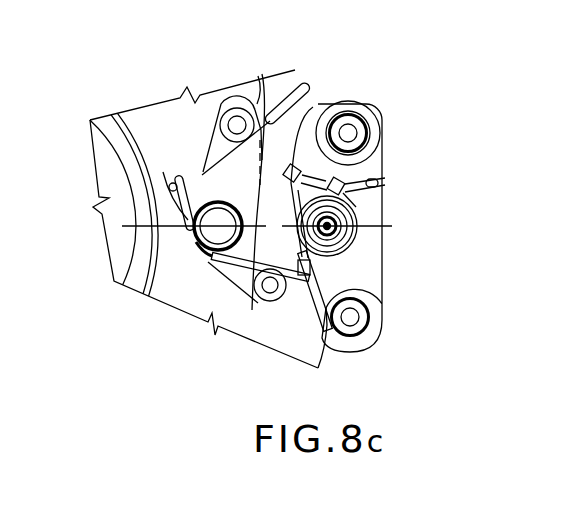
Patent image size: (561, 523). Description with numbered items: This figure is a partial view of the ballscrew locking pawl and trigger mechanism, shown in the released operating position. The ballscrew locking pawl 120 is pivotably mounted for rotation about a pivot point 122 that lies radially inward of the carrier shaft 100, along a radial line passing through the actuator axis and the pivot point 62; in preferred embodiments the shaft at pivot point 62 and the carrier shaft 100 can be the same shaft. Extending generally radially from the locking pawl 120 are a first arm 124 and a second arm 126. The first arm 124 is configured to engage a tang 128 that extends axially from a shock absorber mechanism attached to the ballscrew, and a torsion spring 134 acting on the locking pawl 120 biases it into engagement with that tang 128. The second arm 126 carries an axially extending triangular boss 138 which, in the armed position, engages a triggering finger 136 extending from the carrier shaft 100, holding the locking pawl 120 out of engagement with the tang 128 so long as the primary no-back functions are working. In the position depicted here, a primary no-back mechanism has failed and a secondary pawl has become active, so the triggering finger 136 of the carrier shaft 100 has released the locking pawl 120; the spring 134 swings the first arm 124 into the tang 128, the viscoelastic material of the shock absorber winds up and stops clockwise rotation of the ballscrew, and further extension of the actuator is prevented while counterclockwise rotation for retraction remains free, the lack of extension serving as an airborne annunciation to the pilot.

The pivot point 62 is at (350, 238).
The carrier shaft 100 is at (383, 178).
The ballscrew locking pawl 120 is at (255, 193).
The pivot point 122 is at (218, 226).
The first arm 124 is at (165, 173).
The second arm 126 is at (312, 106).
The tang 128 is at (135, 133).
The torsion spring 134 is at (250, 310).
The triggering finger 136 is at (378, 110).
The triangular boss 138 is at (258, 85).